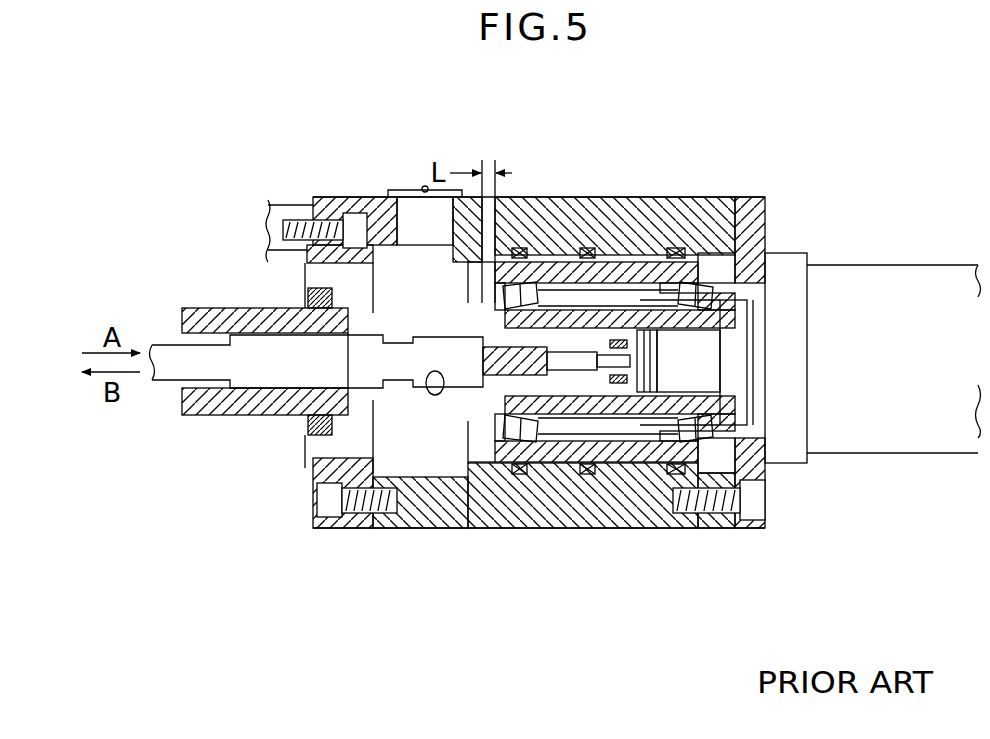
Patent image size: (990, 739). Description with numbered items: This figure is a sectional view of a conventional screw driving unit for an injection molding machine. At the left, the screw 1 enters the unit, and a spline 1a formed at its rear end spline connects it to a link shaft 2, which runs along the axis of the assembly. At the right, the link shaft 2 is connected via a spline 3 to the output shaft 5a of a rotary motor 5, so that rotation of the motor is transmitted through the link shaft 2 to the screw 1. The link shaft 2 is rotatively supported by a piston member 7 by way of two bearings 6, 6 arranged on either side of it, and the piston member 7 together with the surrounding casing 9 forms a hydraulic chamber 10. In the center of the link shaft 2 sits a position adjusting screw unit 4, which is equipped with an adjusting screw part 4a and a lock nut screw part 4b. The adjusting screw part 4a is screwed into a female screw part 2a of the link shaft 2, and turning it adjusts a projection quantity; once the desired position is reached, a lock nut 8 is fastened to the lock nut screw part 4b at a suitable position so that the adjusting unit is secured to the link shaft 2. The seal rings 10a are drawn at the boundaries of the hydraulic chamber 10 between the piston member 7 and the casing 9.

The screw 1 is at (167, 355).
The spline 1a is at (435, 392).
The link shaft 2 is at (573, 405).
The female screw part 2a is at (563, 415).
The spline 3 is at (700, 333).
The position adjusting screw unit 4 is at (560, 275).
The adjusting screw part 4a is at (497, 412).
The lock nut screw part 4b is at (612, 428).
The rotary motor 5 is at (887, 425).
The output shaft 5a is at (710, 367).
The bearings 6 is at (537, 427).
The piston member 7 is at (562, 252).
The lock nut 8 is at (632, 352).
The casing 9 is at (680, 212).
The hydraulic chamber 10 is at (628, 470).
The seal rings 10a is at (625, 248).